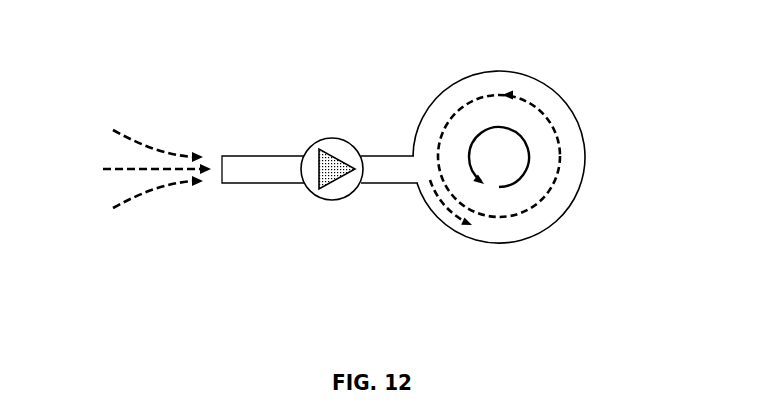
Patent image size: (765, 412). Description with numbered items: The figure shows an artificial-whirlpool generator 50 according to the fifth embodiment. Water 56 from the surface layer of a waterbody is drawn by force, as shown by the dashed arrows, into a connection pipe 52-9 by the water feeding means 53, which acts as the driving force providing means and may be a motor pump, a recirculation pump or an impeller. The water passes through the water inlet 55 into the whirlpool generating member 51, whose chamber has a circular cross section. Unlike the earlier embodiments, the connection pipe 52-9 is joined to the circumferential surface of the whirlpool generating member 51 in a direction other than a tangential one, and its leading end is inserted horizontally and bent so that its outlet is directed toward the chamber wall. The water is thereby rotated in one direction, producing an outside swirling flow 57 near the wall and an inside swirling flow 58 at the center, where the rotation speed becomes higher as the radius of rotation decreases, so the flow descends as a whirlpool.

The artificial-whirlpool generator 50 is at (528, 125).
The whirlpool generating member 51 is at (482, 70).
The connection pipe 52-9 is at (263, 185).
The water feeding means 53 is at (333, 137).
The water inlet 55 is at (423, 168).
The water 56 is at (152, 146).
The swirling air flow 57 is at (553, 183).
The inside swirling flow 58 is at (527, 150).